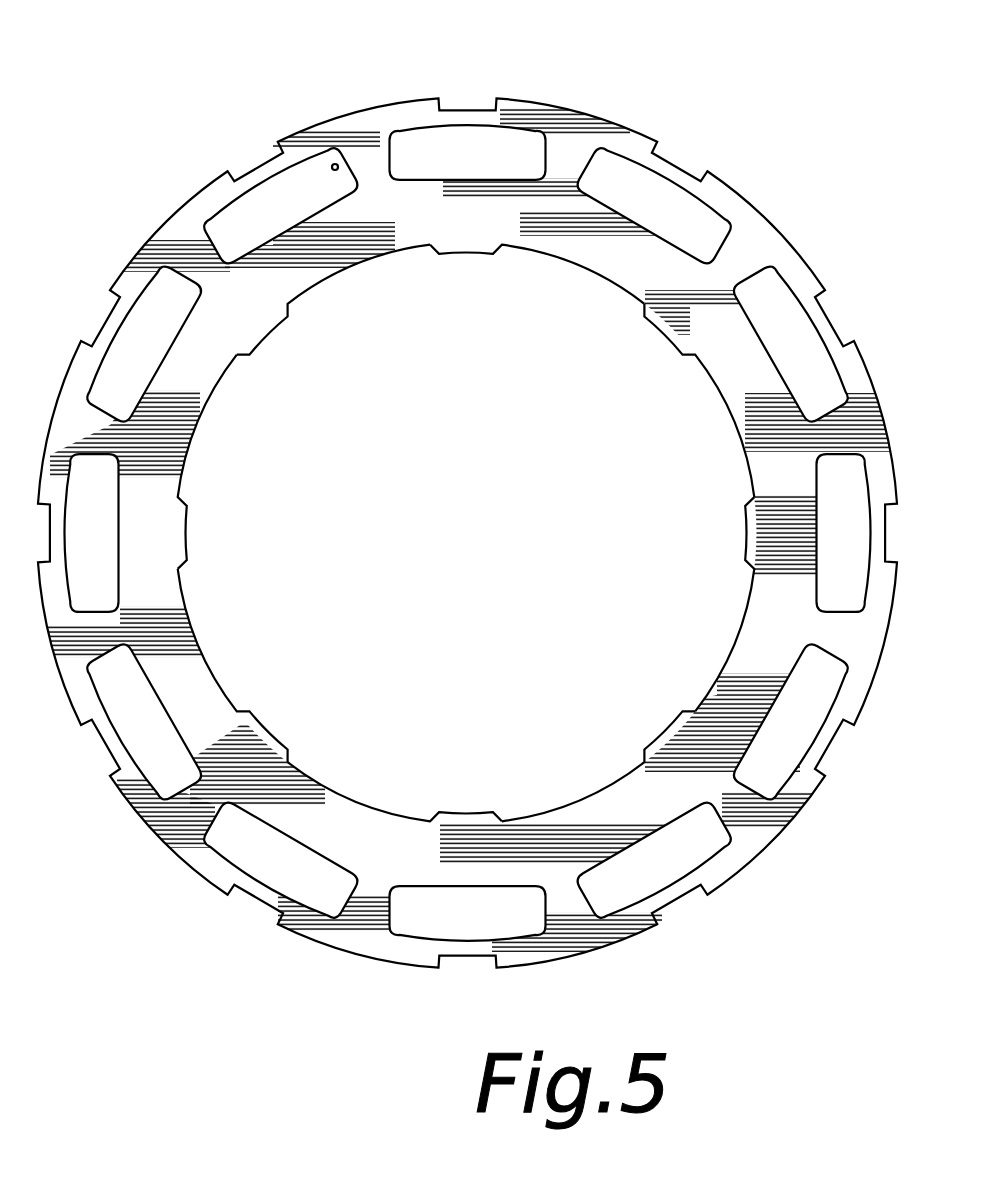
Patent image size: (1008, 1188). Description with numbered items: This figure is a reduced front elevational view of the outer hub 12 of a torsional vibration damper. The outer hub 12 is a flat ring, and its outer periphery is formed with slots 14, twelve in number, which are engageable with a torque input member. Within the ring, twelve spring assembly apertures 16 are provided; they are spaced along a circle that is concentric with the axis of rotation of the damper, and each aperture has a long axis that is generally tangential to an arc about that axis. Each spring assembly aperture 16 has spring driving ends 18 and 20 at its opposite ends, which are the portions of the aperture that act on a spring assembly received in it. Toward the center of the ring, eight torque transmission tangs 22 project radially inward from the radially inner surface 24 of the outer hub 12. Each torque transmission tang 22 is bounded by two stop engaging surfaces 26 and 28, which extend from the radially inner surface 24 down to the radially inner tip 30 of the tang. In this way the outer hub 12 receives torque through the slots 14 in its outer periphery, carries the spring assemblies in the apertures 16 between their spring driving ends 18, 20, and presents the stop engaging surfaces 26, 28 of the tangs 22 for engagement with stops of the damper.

The outer hub 12 is at (467, 514).
The slots 14 is at (107, 312).
The spring assembly apertures 16 is at (290, 868).
The spring driving end 18 is at (205, 226).
The spring driving end 20 is at (336, 164).
The torque transmission tangs 22 is at (668, 360).
The radially inner surface 24 is at (740, 432).
The stop engaging surface 26 is at (498, 256).
The stop engaging surface 28 is at (433, 256).
The radially inner tip 30 is at (745, 548).